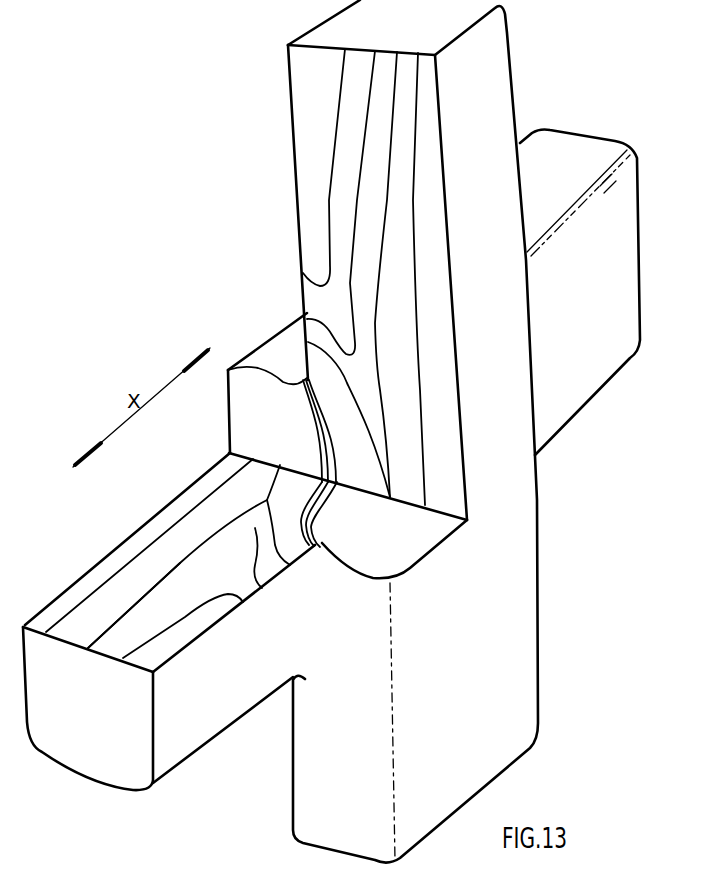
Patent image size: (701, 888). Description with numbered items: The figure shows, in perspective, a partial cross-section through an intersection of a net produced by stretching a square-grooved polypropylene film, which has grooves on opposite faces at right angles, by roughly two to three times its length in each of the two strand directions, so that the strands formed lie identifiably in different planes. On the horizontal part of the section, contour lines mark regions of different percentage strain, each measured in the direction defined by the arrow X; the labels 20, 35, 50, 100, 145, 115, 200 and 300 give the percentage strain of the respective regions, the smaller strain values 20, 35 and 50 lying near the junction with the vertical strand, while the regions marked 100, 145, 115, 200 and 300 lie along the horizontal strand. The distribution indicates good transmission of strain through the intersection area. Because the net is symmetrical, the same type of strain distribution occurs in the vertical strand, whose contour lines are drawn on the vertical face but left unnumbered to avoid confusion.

The wooden body member 20 is at (390, 541).
The bevelled edge 35 is at (322, 541).
The fillet 50 is at (308, 538).
The arm member 100 is at (217, 482).
The grain line 145 is at (238, 495).
The grain line 115 is at (208, 563).
The grain line 200 is at (233, 577).
The front face edge 300 is at (182, 637).